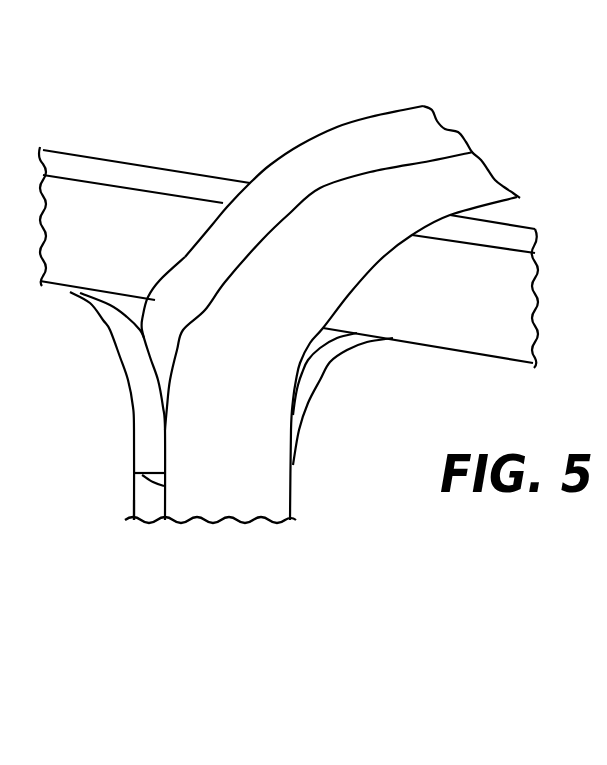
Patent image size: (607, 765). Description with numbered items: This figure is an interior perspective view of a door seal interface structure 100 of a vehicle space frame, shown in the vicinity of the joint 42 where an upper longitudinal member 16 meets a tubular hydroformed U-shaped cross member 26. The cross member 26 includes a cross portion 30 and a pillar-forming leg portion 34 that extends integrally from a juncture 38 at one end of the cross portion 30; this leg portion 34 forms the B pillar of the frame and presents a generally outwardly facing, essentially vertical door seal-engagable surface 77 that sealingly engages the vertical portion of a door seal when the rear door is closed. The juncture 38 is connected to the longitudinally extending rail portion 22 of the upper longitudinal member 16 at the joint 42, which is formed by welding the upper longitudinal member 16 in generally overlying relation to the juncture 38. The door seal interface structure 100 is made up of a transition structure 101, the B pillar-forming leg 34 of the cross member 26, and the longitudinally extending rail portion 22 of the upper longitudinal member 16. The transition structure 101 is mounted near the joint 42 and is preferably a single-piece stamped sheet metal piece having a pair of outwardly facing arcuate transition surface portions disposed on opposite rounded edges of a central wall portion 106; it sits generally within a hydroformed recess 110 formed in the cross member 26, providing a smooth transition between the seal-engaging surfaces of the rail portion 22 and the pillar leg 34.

The upper longitudinal member 16 is at (205, 167).
The longitudinally extending rail portion 22 is at (122, 178).
The tubular hydroformed U-shaped cross member 26 is at (400, 133).
The cross portion 30 is at (445, 148).
The pillar-forming leg portion 34 is at (275, 492).
The juncture 38 is at (330, 270).
The joint 42 is at (185, 257).
The vertical door seal-engagable surface 77 is at (140, 503).
The door seal interface structure 100 is at (128, 447).
The transition structure 101 is at (308, 394).
The central wall portion 106 is at (330, 337).
The hydroformed recess 110 is at (165, 488).